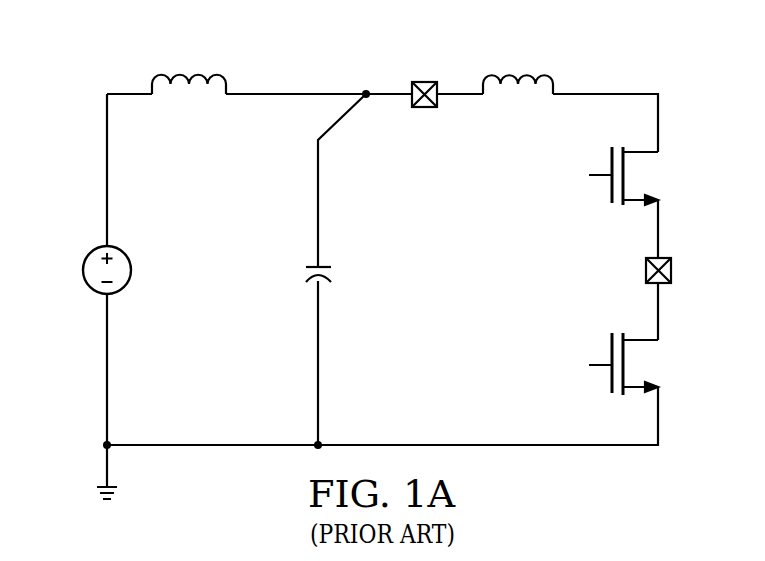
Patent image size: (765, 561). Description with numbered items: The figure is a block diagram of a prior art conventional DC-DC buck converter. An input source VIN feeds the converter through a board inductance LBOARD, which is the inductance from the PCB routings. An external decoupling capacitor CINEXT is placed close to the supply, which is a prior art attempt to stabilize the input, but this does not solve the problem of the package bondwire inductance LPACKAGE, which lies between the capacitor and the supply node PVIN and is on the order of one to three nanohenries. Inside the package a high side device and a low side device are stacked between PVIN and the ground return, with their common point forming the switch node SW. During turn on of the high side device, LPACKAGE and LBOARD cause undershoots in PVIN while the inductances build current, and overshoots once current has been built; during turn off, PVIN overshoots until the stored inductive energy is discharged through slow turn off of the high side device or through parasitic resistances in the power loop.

The input voltage source VIN is at (84, 270).
The board inductance LBOARD is at (183, 63).
The external input capacitor CINEXT is at (274, 253).
The package bondwire inductance LPACKAGE is at (507, 63).
The supply PVIN is at (609, 79).
The switch node pin SW is at (637, 271).